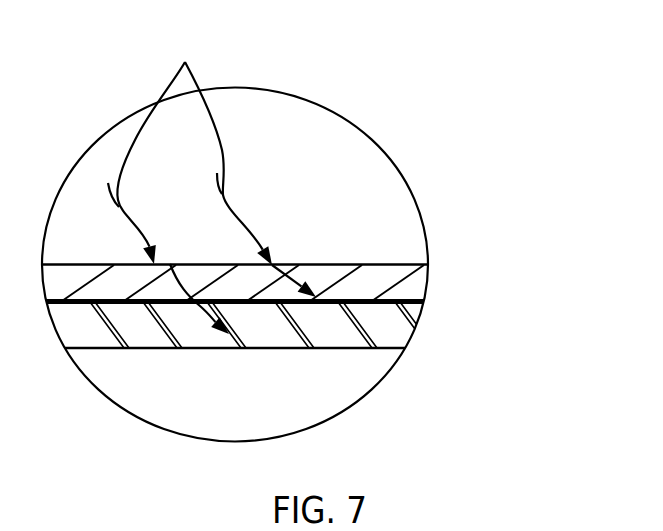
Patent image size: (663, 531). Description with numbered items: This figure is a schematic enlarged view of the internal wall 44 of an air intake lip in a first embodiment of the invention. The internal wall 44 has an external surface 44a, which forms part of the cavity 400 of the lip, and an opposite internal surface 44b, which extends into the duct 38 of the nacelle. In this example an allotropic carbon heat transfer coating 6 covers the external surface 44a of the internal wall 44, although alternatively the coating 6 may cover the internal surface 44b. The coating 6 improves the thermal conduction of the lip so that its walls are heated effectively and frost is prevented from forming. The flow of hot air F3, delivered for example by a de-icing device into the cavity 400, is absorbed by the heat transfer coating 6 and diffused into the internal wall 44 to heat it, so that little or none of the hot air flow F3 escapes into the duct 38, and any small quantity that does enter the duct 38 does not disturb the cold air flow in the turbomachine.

The heat transfer coating 6 is at (372, 282).
The internal wall 44 is at (387, 330).
The external surface 44a is at (380, 298).
The internal surface 44b is at (360, 348).
The cavity 400 is at (325, 175).
The duct 38 is at (270, 410).
The flow of hot air F3 is at (185, 62).